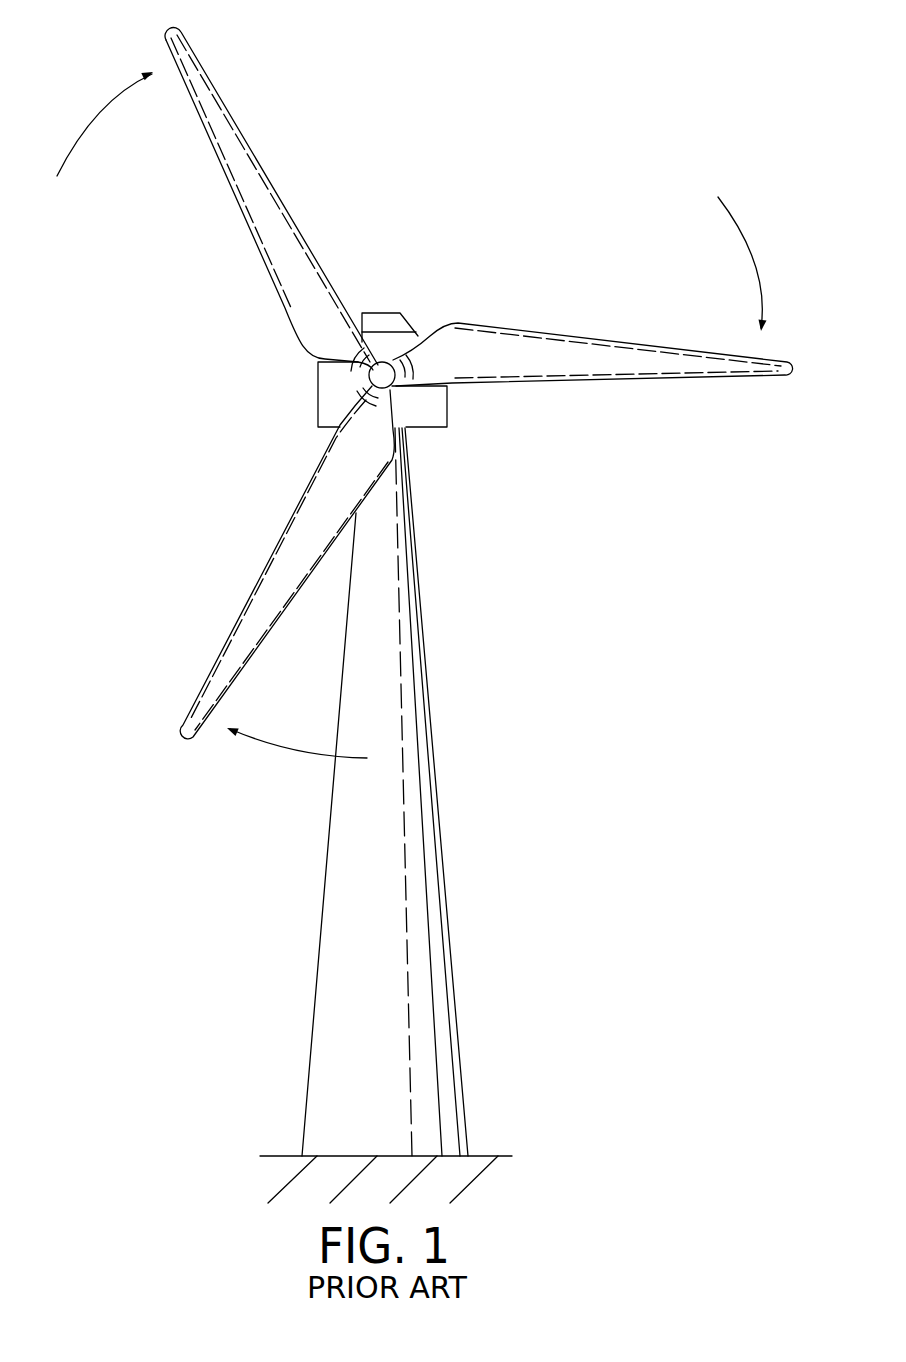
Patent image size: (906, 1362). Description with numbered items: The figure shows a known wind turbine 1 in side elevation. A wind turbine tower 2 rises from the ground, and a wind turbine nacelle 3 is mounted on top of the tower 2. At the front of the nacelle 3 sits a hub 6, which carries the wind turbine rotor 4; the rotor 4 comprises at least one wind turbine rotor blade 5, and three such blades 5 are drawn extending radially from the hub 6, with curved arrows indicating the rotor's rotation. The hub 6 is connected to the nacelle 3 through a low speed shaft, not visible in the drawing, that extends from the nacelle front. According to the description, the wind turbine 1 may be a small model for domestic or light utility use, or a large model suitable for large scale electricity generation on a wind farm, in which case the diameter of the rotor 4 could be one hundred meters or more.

The wind turbine 1 is at (607, 968).
The wind turbine tower 2 is at (442, 838).
The wind turbine nacelle 3 is at (443, 408).
The wind turbine rotor 4 is at (556, 162).
The wind turbine rotor blade 5 is at (582, 342).
The hub 6 is at (382, 372).